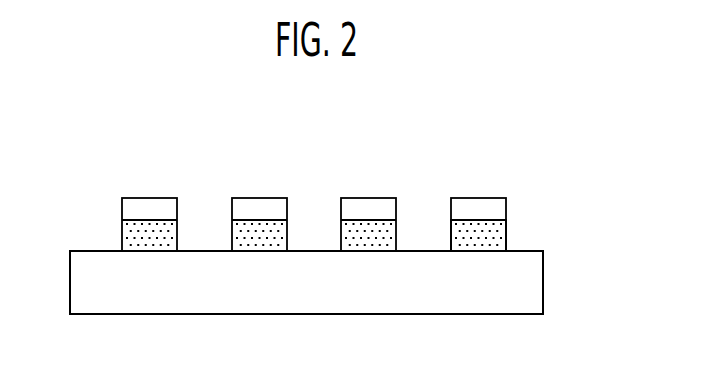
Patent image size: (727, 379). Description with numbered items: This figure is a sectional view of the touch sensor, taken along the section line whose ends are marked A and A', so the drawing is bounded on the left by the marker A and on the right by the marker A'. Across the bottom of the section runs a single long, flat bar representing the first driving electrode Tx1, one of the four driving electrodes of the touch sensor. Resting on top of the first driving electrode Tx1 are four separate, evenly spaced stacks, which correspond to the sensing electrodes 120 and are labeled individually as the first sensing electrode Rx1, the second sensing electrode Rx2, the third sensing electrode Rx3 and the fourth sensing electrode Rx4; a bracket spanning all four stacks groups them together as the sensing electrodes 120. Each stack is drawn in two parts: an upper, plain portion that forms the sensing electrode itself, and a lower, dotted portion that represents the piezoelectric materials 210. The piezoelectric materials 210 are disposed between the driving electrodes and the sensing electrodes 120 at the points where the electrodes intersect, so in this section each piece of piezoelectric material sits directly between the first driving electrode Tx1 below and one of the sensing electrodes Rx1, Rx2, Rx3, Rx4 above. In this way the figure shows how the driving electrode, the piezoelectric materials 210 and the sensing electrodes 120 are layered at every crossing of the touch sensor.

The sensing electrodes 120 is at (493, 142).
The piezoelectric materials 210 is at (506, 233).
The first driving electrode Tx1 is at (543, 283).
The first sensing electrode Rx1 is at (149, 198).
The second sensing electrode Rx2 is at (259, 198).
The third sensing electrode Rx3 is at (371, 198).
The fourth sensing electrode Rx4 is at (481, 198).
The section line end point A is at (72, 329).
The section line end point A' is at (544, 329).